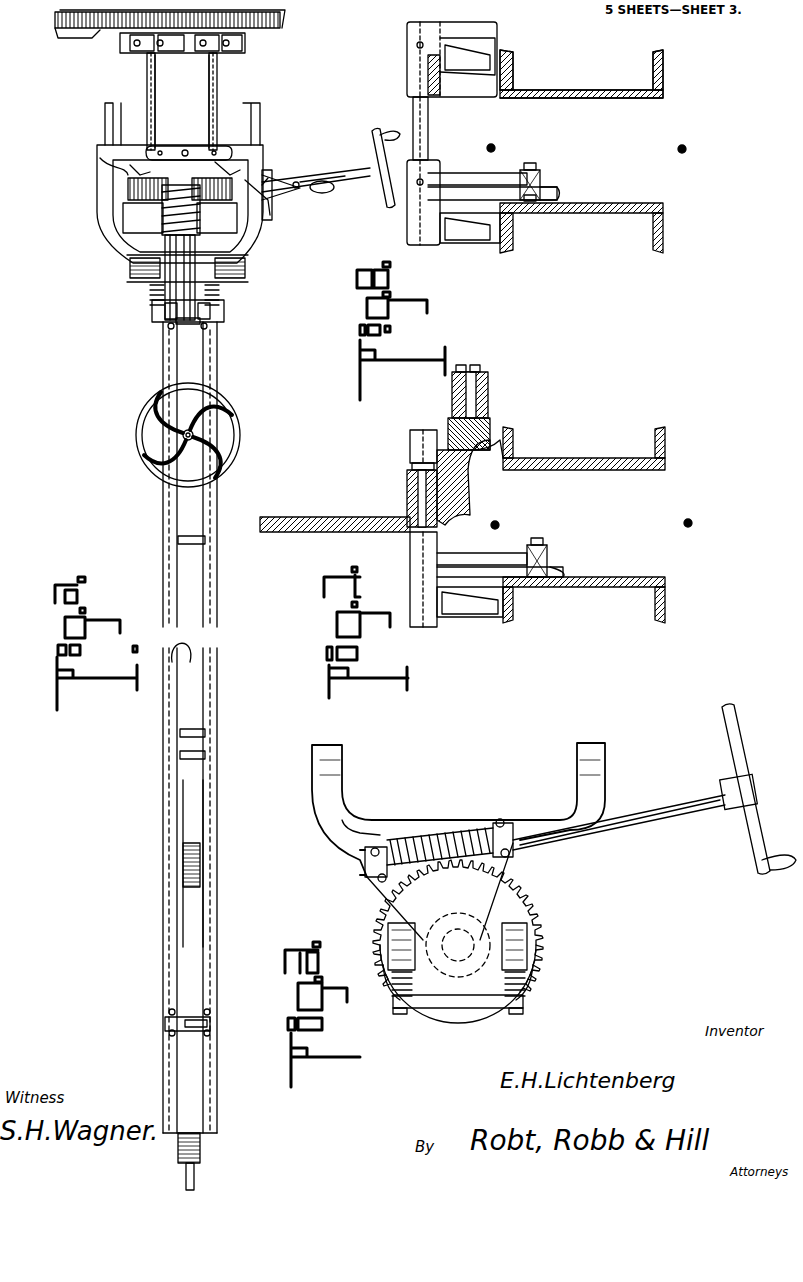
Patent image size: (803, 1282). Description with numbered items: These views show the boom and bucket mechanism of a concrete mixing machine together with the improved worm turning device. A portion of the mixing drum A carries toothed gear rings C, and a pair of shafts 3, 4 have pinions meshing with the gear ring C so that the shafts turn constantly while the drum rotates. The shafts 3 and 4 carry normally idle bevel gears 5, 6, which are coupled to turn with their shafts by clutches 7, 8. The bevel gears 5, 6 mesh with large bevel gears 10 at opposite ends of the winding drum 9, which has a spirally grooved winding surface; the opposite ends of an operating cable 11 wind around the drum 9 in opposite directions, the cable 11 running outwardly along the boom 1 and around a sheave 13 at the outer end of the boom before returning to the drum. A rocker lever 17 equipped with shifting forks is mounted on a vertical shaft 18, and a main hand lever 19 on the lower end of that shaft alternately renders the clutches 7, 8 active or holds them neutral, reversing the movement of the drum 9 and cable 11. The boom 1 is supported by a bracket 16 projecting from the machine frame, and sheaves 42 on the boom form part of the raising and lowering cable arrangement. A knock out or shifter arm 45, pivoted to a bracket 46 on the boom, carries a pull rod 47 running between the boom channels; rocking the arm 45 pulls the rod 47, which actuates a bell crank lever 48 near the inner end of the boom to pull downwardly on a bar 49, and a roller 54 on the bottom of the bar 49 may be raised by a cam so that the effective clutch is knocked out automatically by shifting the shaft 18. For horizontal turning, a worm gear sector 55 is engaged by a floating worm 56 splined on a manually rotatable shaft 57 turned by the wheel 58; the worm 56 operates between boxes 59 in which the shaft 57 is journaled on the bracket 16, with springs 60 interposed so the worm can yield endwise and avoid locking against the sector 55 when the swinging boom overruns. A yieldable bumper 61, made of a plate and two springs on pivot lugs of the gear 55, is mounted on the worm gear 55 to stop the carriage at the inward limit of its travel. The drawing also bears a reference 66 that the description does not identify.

In FIG. 5, the mixing drum A is at (90, 30).
In FIG. 5, the toothed gear rings C is at (278, 20).
In FIG. 5, the boom 1 is at (165, 711).
In FIG. 8, the boom 1 is at (565, 68).
In FIG. 7, the boom 1 is at (560, 432).
In FIG. 5, the shaft 3 is at (146, 85).
In FIG. 5, the shaft 4 is at (210, 66).
In FIG. 5, the bevel gear 5 is at (160, 205).
In FIG. 5, the bevel gear 6 is at (240, 235).
In FIG. 5, the clutch 7 is at (130, 175).
In FIG. 5, the clutch 8 is at (226, 165).
In FIG. 5, the winding drum 9 is at (231, 374).
In FIG. 5, the large bevel gears 10 is at (160, 318).
In FIG. 8, the operating cable 11 is at (488, 146).
In FIG. 7, the operating cable 11 is at (505, 507).
In FIG. 5, the sheave 13 is at (186, 1179).
In FIG. 5, the bracket 16 is at (125, 178).
In FIG. 6, the bracket 16 is at (580, 850).
In FIG. 5, the rocker lever 17 is at (153, 145).
In FIG. 5, the vertical shaft 18 is at (185, 150).
In FIG. 5, the main hand lever 19 is at (280, 170).
In FIG. 5, the sheave 42 is at (182, 840).
In FIG. 5, the knock out or shifter arm 45 is at (165, 1025).
In FIG. 8, the knock out or shifter arm 45 is at (497, 30).
In FIG. 5, the bracket 46 is at (182, 1027).
In FIG. 8, the bracket 46 is at (476, 178).
In FIG. 5, the pull rod 47 is at (170, 648).
In FIG. 8, the pull rod 47 is at (548, 174).
In FIG. 7, the pull rod 47 is at (550, 550).
In FIG. 7, the bell crank lever 48 is at (410, 468).
In FIG. 7, the bar 49 is at (350, 515).
In FIG. 7, the roller 54 is at (450, 378).
In FIG. 5, the worm gear sector 55 is at (130, 265).
In FIG. 6, the worm gear sector 55 is at (505, 905).
In FIG. 5, the worm 56 is at (225, 250).
In FIG. 6, the worm 56 is at (440, 835).
In FIG. 5, the manually rotatable shaft 57 is at (352, 170).
In FIG. 6, the manually rotatable shaft 57 is at (641, 805).
In FIG. 5, the wheel 58 is at (373, 133).
In FIG. 6, the wheel 58 is at (726, 744).
In FIG. 6, the boxes 59 is at (375, 850).
In FIG. 6, the springs 60 is at (390, 830).
In FIG. 5, the yieldable bumper 61 is at (200, 322).
In FIG. 6, the yieldable bumper 61 is at (481, 1008).
In FIG. 5, the collar 66 is at (270, 200).